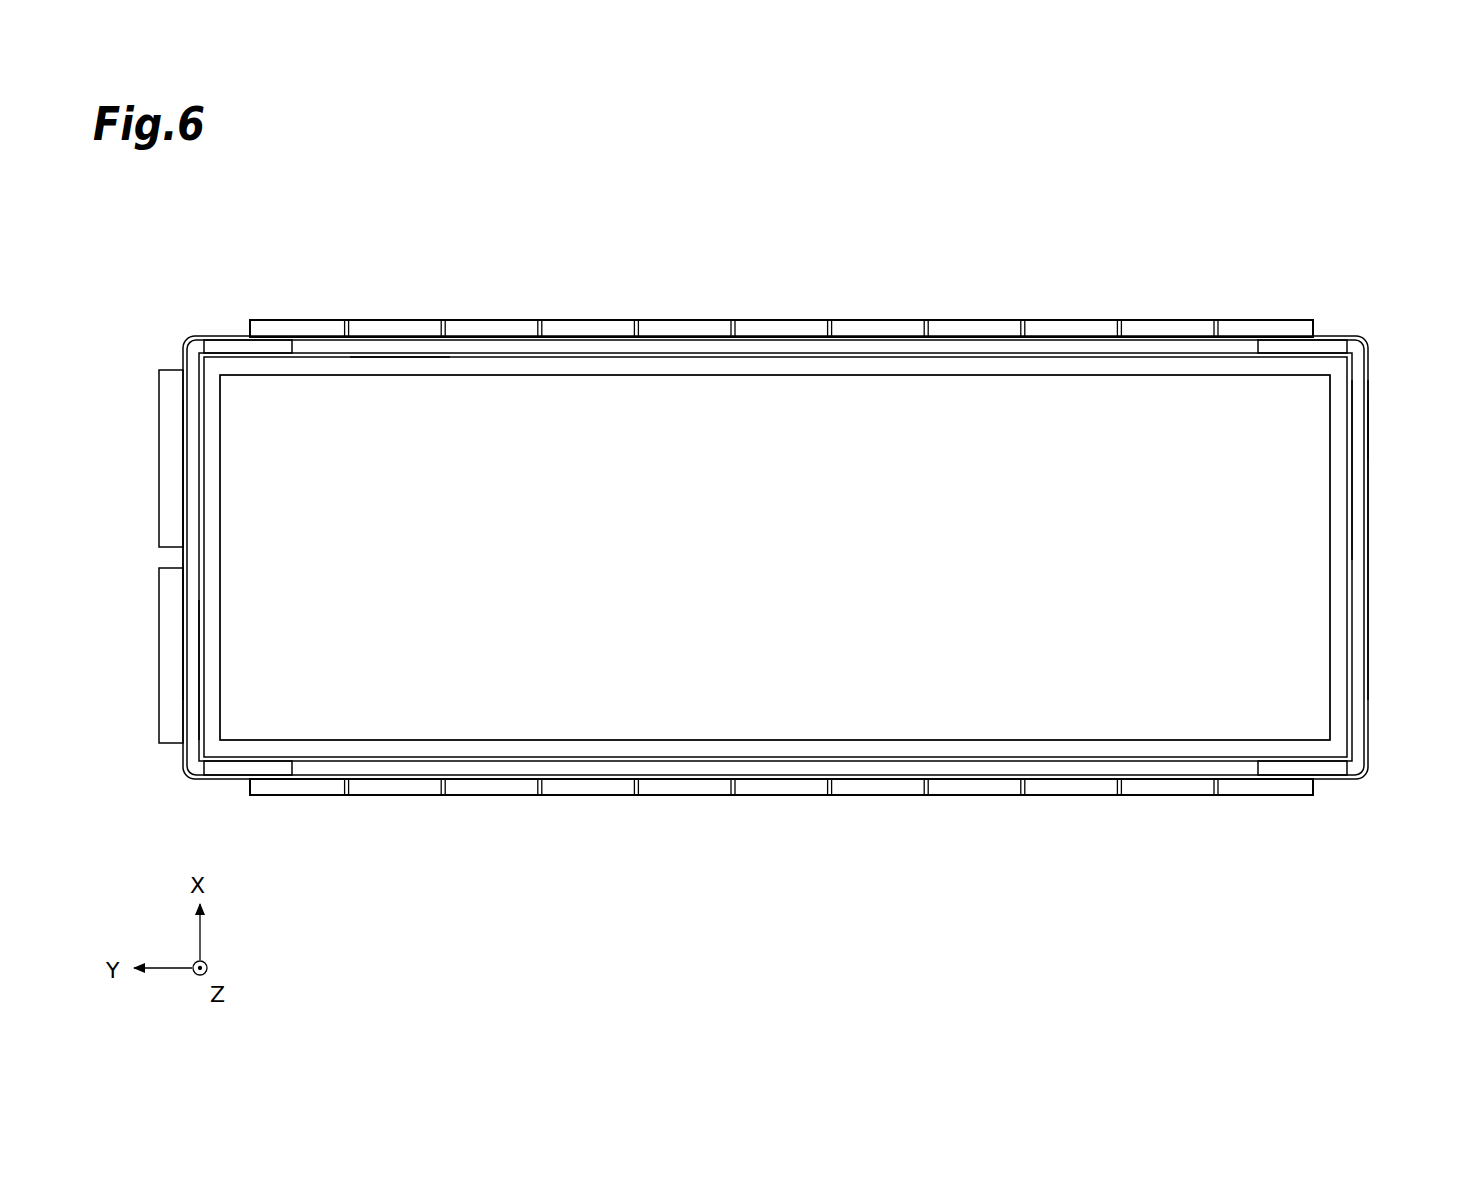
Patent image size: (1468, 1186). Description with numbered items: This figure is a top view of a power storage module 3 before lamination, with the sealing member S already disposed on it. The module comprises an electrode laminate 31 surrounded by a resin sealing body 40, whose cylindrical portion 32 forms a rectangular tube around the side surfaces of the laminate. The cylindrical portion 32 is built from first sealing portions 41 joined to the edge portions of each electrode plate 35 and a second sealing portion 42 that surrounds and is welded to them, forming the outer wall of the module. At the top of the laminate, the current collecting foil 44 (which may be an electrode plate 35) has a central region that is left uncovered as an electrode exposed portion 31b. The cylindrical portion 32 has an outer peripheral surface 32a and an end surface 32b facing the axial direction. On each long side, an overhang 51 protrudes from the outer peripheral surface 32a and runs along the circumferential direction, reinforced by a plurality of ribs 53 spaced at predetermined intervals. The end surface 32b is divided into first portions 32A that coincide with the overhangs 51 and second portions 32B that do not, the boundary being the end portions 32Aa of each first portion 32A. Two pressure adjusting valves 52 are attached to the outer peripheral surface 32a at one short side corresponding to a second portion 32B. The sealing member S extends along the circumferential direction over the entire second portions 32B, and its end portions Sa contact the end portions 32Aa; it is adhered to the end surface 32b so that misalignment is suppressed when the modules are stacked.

The power storage module 3 is at (1358, 257).
The electrode laminate 31 is at (1264, 588).
The electrode exposed portion 31b is at (398, 405).
The cylindrical portion 32 is at (1162, 860).
The first portion 32A is at (760, 329).
The end portion 32Aa is at (259, 330).
The second portion 32B is at (177, 555).
The outer peripheral surface 32a is at (1368, 420).
The end surface 32b is at (1153, 345).
The electrode plate 35 is at (775, 557).
The sealing body 40 is at (587, 311).
The first sealing portion 41 is at (1092, 748).
The second sealing portion 42 is at (1143, 766).
The current collecting foil 44 is at (583, 643).
The overhang 51 is at (1072, 330).
The pressure adjusting valve 52 is at (172, 462).
The rib 53 is at (447, 320).
The sealing member S is at (1357, 477).
The end portion Sa is at (284, 358).